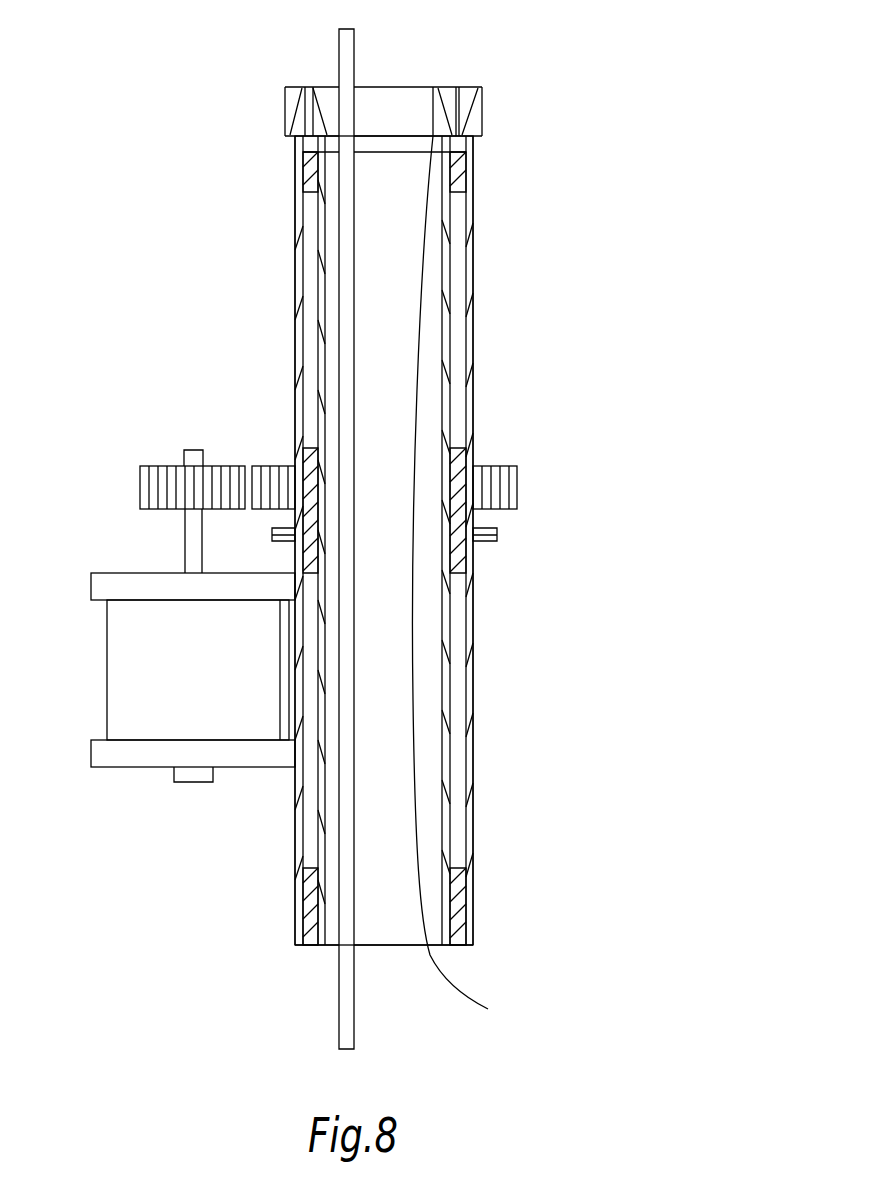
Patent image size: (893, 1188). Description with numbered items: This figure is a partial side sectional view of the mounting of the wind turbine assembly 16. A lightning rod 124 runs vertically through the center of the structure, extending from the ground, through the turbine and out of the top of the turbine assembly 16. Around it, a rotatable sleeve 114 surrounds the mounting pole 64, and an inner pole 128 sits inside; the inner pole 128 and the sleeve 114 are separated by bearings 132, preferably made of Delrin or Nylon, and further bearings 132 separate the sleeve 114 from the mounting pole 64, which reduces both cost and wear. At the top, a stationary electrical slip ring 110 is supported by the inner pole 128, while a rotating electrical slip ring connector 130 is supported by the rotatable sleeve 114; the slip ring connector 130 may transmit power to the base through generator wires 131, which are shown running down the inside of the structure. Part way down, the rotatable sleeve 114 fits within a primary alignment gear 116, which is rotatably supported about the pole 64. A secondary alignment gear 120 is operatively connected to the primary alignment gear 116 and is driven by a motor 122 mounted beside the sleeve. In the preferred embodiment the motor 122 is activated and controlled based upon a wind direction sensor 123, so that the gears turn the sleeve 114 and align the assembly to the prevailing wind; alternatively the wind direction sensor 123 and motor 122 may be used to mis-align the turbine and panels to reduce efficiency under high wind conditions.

The turbine assembly 16 is at (240, 205).
The mounting pole 64 is at (474, 779).
The stationary electrical slip ring 110 is at (450, 86).
The rotatable sleeve 114 is at (474, 265).
The primary alignment gear 116 is at (275, 466).
The secondary alignment gear 120 is at (155, 466).
The motor 122 is at (115, 694).
The wind direction sensor 123 is at (195, 781).
The lightning rod 124 is at (338, 47).
The inner pole 128 is at (451, 337).
The rotating electrical slip ring connector 130 is at (483, 100).
The generator wires 131 is at (466, 992).
The bearings 132 is at (452, 170).